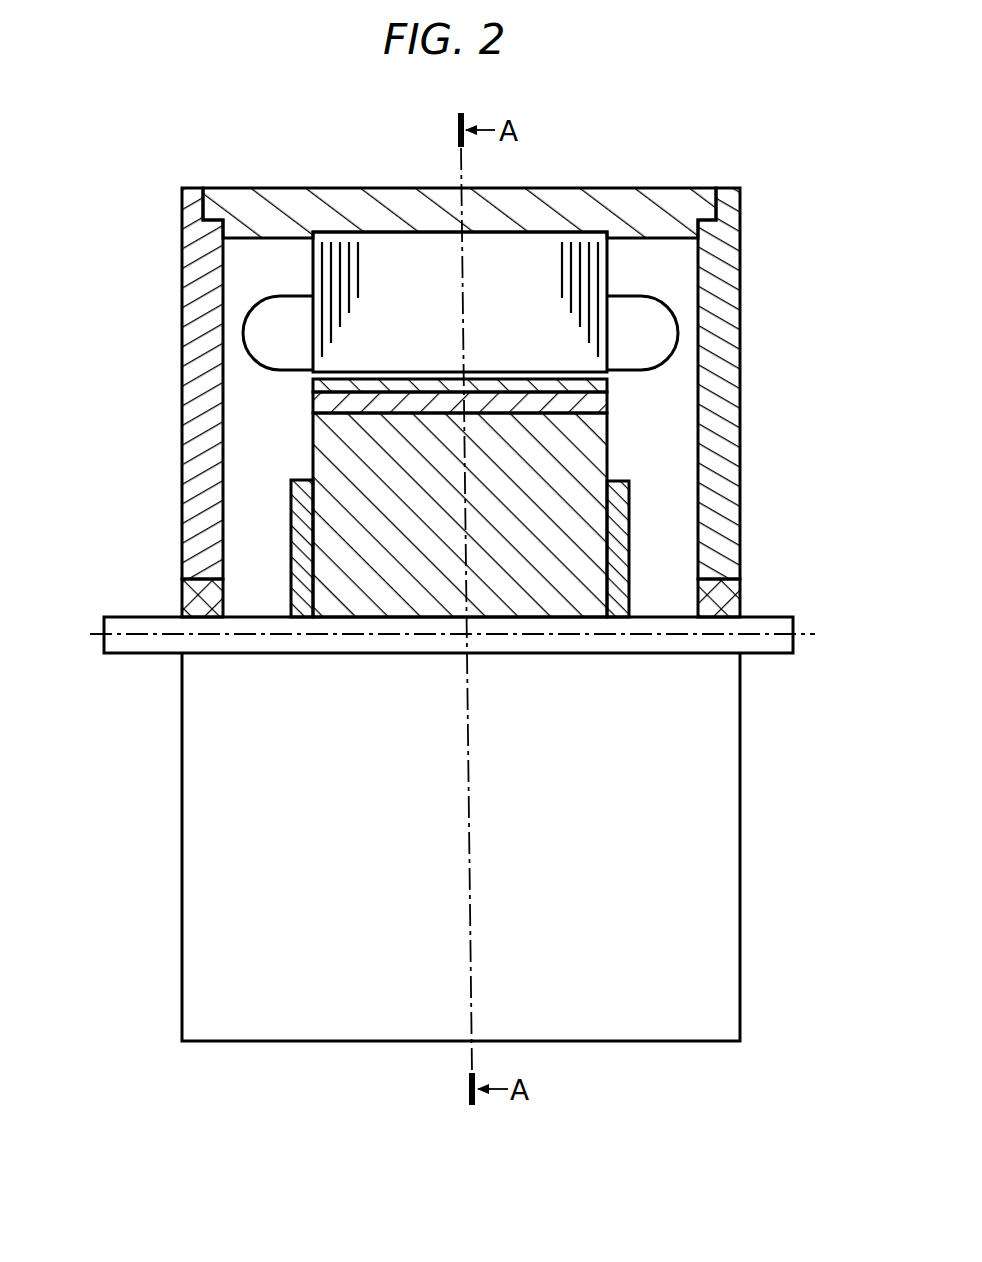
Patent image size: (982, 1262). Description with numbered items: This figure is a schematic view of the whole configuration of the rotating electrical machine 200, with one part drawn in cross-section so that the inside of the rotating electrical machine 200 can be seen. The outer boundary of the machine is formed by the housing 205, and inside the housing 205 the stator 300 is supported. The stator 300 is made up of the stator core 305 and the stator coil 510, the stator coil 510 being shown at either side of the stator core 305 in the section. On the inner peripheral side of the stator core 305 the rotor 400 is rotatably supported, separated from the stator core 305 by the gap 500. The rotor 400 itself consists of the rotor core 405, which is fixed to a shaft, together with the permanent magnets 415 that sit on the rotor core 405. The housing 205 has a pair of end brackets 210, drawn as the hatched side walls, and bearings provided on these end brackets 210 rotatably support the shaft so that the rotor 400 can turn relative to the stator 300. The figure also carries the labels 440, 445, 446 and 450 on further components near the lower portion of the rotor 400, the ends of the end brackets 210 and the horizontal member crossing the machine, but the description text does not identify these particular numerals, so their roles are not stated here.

The rotating electrical machine 200 is at (467, 585).
The housing 205 is at (292, 222).
The end brackets 210 is at (193, 468).
The stator 300 is at (469, 250).
The stator core 305 is at (410, 262).
The rotor 400 is at (546, 590).
The rotor core 405 is at (333, 598).
The permanent magnets 415 is at (405, 402).
The side spacer 440 is at (298, 560).
The left bearing seal 445 is at (192, 598).
The right bearing seal 446 is at (728, 600).
The shaft 450 is at (130, 643).
The gap 500 is at (540, 374).
The stator coil 510 is at (263, 325).